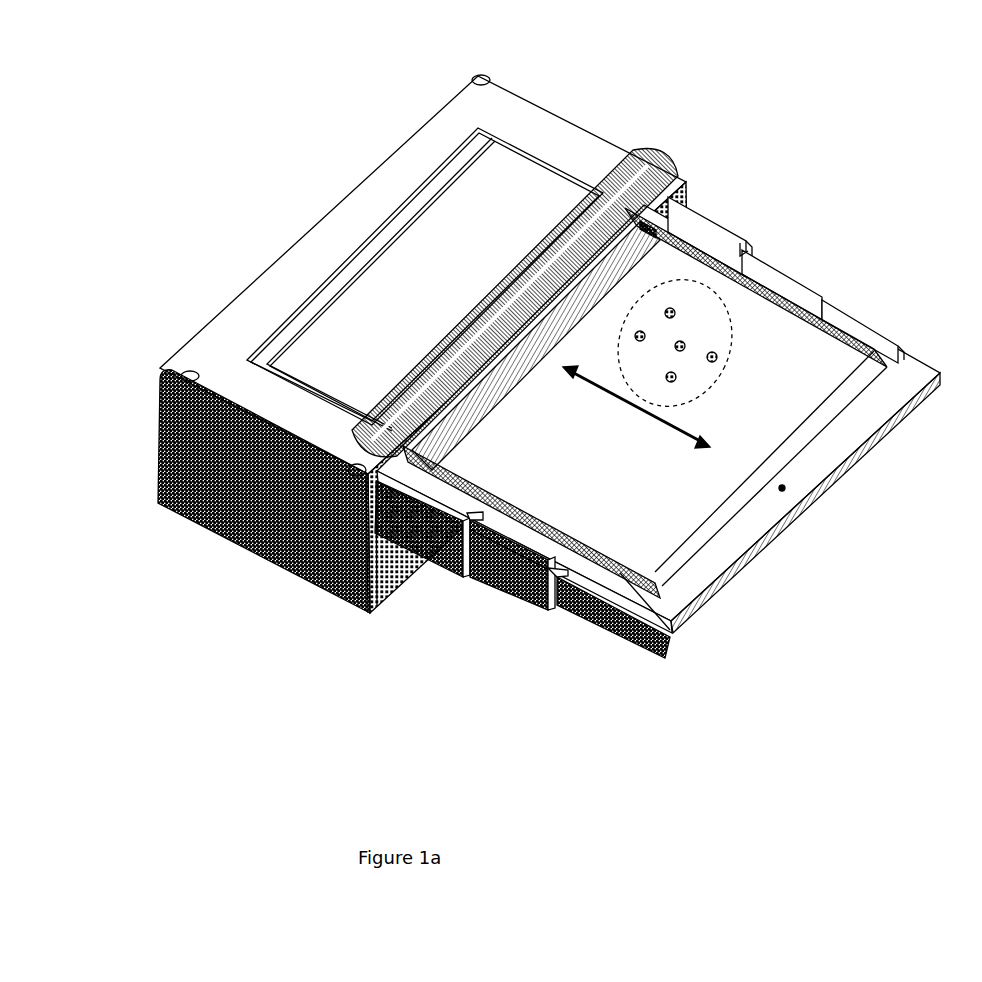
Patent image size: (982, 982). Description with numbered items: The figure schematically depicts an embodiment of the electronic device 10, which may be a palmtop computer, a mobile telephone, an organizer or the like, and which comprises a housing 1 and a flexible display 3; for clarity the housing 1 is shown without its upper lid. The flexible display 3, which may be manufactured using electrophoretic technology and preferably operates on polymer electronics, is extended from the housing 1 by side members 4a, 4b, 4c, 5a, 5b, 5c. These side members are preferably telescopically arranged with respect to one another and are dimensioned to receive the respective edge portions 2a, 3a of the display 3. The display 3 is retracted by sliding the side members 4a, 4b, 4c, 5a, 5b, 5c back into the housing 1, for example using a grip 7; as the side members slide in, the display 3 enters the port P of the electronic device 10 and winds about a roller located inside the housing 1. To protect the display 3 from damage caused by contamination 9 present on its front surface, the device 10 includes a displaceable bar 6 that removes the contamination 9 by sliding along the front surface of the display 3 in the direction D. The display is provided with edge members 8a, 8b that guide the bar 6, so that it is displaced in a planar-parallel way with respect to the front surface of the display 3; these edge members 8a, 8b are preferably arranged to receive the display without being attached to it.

The electronic device 10 is at (549, 366).
The housing 1 is at (250, 543).
The flexible display 3 is at (440, 228).
The edge portion of the display 3a is at (660, 225).
The edge portion of the display 2a is at (658, 453).
The side member 4a is at (695, 226).
The side member 4b is at (777, 278).
The side member 4c is at (867, 327).
The side member 5a is at (417, 557).
The side member 5b is at (497, 580).
The side member 5c is at (597, 620).
The displaceable bar 6 is at (527, 347).
The grip 7 is at (780, 537).
The edge member 8a is at (833, 340).
The edge member 8b is at (556, 524).
The contamination 9 is at (710, 400).
The port P is at (636, 160).
The direction D is at (660, 423).